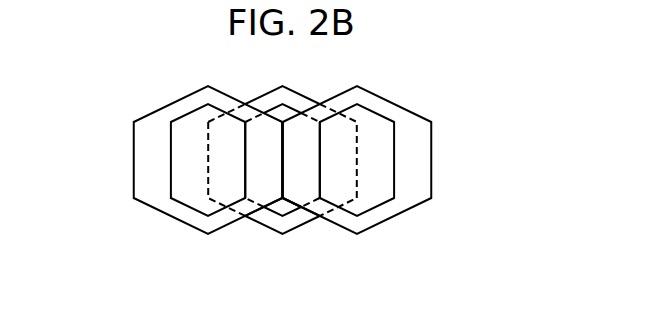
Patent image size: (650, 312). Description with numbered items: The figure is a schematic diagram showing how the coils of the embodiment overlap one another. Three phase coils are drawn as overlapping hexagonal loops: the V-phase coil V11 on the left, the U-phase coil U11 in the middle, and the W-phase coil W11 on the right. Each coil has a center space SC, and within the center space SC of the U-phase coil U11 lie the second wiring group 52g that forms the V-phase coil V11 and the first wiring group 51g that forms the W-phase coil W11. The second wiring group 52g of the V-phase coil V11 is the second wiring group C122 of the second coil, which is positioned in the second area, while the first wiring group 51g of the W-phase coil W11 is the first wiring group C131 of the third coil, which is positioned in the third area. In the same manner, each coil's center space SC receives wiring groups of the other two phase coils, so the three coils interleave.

The V-phase coil V11 is at (135, 152).
The U-phase coil U11 is at (302, 104).
The W-phase coil W11 is at (432, 150).
The second wiring group 52g is at (263, 160).
The first wiring group 51g is at (301, 160).
The second wiring group of the second coil C122 is at (268, 203).
The center space SC is at (293, 209).
The first wiring group of the third coil C131 is at (310, 203).